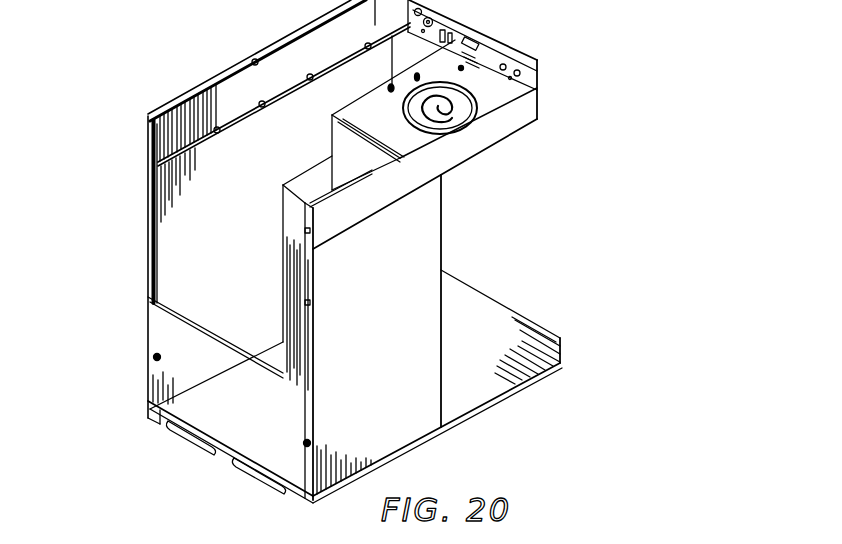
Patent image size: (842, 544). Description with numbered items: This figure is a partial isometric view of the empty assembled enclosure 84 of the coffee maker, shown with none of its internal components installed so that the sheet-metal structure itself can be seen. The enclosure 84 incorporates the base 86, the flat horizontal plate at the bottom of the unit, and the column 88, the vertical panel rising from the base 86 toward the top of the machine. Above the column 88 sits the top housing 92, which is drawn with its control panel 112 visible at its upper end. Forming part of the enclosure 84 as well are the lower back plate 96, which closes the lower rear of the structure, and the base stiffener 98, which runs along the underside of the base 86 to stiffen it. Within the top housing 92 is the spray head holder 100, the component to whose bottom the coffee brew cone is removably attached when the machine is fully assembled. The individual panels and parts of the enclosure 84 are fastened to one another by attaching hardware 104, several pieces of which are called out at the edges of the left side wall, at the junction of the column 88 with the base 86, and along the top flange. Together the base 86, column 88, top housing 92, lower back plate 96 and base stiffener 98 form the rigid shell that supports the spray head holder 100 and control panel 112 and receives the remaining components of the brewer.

The enclosure 84 is at (190, 232).
The base 86 is at (556, 340).
The column 88 is at (443, 253).
The top housing 92 is at (538, 92).
The lower back plate 96 is at (148, 400).
The base stiffener 98 is at (192, 447).
The spray head holder 100 is at (377, 155).
The attaching hardware 104 is at (306, 74).
The control panel 112 is at (487, 50).